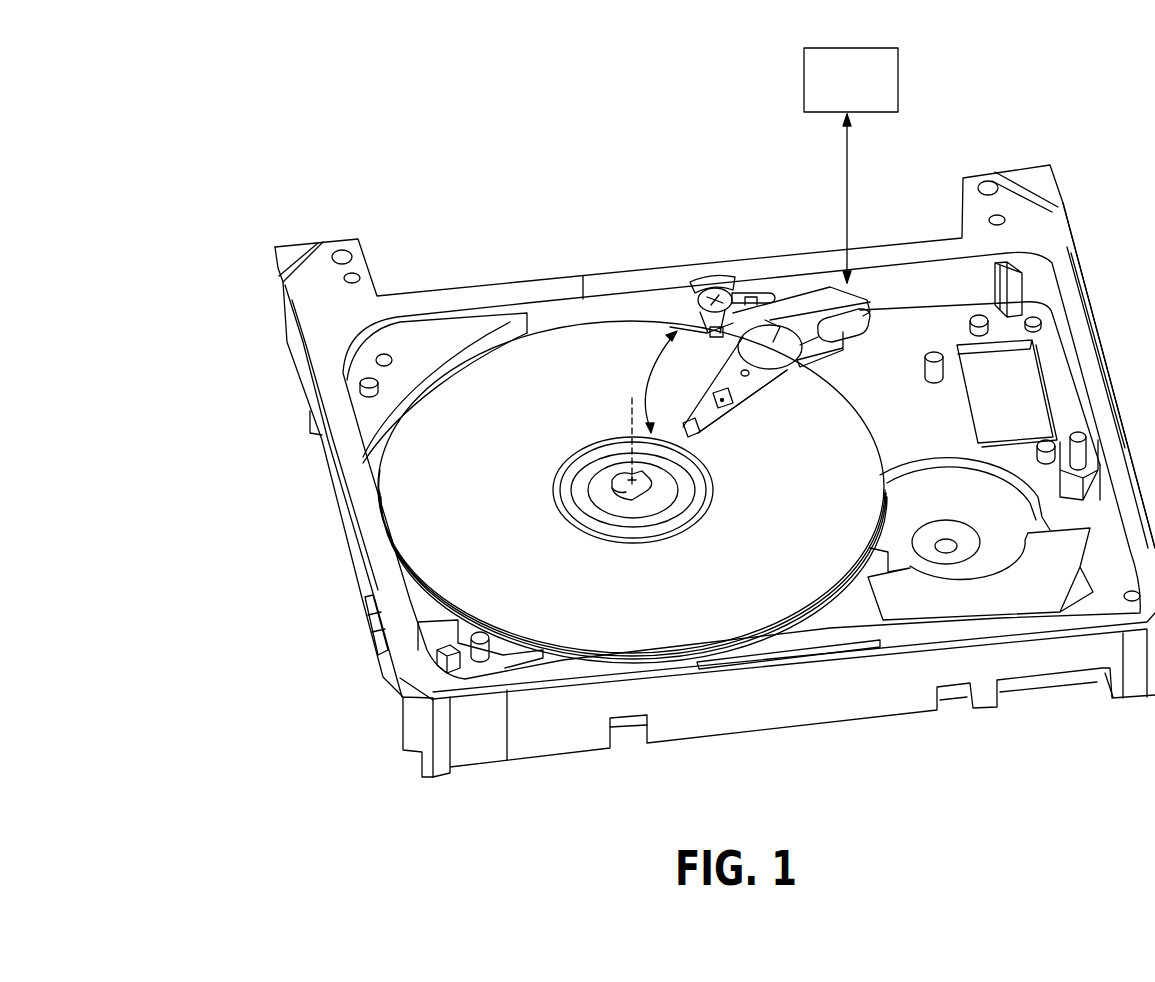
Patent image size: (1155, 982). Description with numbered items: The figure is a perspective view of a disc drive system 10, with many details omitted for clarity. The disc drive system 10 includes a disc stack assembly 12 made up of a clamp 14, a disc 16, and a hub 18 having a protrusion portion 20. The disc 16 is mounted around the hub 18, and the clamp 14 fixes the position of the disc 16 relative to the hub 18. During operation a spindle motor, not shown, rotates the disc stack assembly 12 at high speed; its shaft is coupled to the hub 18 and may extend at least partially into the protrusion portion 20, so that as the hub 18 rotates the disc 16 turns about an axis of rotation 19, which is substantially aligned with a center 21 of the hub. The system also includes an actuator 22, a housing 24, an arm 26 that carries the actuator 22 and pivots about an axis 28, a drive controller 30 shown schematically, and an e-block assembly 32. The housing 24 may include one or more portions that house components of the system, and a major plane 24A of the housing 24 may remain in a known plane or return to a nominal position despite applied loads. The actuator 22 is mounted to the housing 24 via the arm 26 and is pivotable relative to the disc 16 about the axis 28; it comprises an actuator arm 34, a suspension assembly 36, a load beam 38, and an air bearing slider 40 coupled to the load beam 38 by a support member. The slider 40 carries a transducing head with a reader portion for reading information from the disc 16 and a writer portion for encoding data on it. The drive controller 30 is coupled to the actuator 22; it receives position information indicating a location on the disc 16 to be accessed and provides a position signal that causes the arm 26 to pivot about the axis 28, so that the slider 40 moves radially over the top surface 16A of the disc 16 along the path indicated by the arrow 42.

The disc drive system 10 is at (705, 412).
The disc stack assembly 12 is at (430, 491).
The clamp 14 is at (678, 518).
The disc 16 is at (821, 534).
The top surface 16A is at (443, 563).
The hub 18 is at (635, 506).
The axis of rotation 19 is at (631, 406).
The protrusion portion 20 is at (617, 491).
The center 21 is at (630, 480).
The actuator 22 is at (774, 387).
The housing 24 is at (836, 698).
The major plane 24A is at (1060, 234).
The arm 26 is at (831, 295).
The axis 28 is at (779, 325).
The drive controller 30 is at (866, 92).
The e-block assembly 32 is at (813, 373).
The actuator arm 34 is at (737, 377).
The suspension assembly 36 is at (740, 408).
The load beam 38 is at (722, 403).
The slider 40 is at (695, 436).
The arrow 42 is at (648, 376).